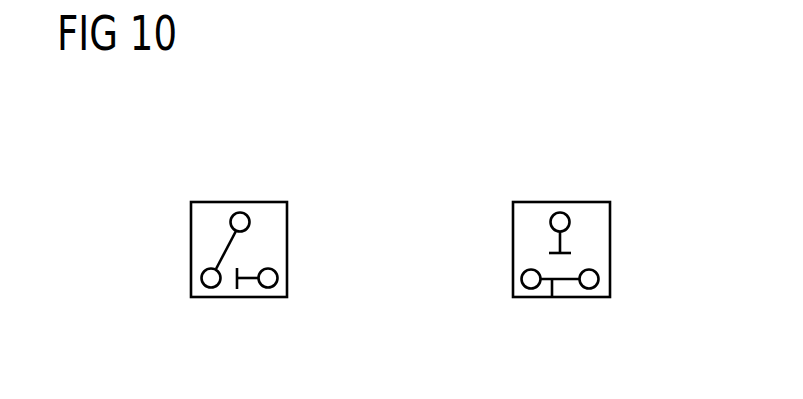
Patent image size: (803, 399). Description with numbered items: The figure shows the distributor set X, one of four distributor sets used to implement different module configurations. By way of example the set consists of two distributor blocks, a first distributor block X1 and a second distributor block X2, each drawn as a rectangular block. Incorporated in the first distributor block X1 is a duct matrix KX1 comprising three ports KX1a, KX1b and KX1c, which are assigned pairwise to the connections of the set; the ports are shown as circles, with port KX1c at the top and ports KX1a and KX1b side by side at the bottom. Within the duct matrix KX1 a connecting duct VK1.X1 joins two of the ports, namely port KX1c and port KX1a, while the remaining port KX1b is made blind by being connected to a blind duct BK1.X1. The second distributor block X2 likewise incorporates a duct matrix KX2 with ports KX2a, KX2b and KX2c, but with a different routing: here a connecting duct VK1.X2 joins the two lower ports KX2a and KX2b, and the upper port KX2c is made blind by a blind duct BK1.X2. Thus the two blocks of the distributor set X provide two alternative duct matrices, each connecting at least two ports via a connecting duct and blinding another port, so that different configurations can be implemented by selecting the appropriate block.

The distributor set X is at (271, 94).
The first distributor block X1 is at (191, 213).
The duct matrix of first distributor block KX1 is at (182, 253).
The connecting duct of first distributor block VK1.X1 is at (205, 262).
The port a of first duct matrix KX1a is at (211, 288).
The port b of first duct matrix KX1b is at (278, 278).
The port c of first duct matrix KX1c is at (240, 212).
The blind duct of first distributor block BK1.X1 is at (250, 279).
The second distributor block X2 is at (580, 202).
The duct matrix of second distributor block KX2 is at (586, 300).
The connecting duct of second distributor block VK1.X2 is at (552, 297).
The port a of second duct matrix KX2a is at (521, 280).
The port b of second duct matrix KX2b is at (599, 279).
The port c of second duct matrix KX2c is at (558, 211).
The blind duct of second distributor block BK1.X2 is at (563, 243).